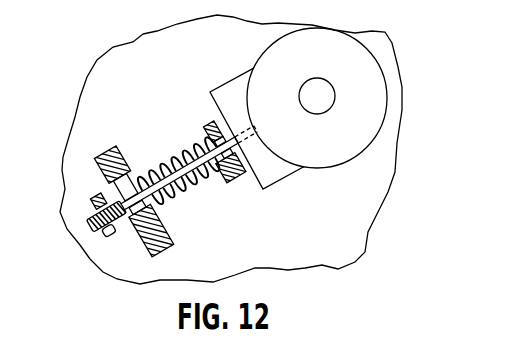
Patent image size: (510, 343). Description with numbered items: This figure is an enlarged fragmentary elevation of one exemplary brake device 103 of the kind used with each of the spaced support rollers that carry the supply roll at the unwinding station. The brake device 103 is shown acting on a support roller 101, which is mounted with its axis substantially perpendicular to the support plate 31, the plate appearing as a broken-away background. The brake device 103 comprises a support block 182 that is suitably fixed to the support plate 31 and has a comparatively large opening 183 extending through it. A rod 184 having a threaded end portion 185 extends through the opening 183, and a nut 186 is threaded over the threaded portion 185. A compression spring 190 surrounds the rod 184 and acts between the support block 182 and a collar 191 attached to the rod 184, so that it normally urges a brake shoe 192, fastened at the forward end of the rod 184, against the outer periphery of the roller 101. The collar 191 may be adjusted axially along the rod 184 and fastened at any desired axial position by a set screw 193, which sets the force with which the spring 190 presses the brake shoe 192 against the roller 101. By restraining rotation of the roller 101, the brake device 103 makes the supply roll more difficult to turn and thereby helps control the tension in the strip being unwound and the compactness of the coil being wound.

The support plate 31 is at (144, 43).
The support roller 101 is at (370, 86).
The brake device 103 is at (180, 116).
The support block 182 is at (118, 152).
The opening 183 is at (158, 226).
The rod 184 is at (182, 157).
The threaded end portion 185 is at (88, 236).
The nut 186 is at (110, 244).
The compression spring 190 is at (168, 201).
The collar 191 is at (240, 174).
The brake shoe 192 is at (237, 77).
The set screw 193 is at (204, 126).